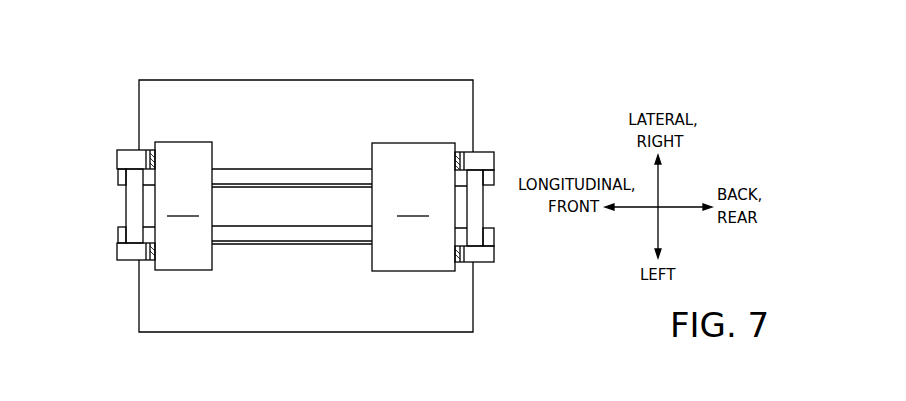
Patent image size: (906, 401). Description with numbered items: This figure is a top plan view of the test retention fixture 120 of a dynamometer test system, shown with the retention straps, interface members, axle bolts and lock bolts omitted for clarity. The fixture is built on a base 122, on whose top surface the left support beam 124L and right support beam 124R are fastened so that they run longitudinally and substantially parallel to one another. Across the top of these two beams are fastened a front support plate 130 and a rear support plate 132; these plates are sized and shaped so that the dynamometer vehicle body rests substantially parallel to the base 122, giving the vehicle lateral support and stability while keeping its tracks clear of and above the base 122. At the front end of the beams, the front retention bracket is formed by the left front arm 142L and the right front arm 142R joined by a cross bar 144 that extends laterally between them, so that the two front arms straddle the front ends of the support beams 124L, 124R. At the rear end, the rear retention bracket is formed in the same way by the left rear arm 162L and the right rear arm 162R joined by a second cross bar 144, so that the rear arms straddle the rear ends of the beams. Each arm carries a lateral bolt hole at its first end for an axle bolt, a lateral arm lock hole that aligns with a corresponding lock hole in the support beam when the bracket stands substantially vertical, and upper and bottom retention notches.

The test retention fixture 120 is at (170, 63).
The base 122 is at (445, 333).
The right support beam 124R is at (283, 172).
The left support beam 124L is at (283, 235).
The front support plate 130 is at (183, 206).
The rear support plate 132 is at (413, 207).
The right front arm 142R is at (128, 160).
The left front arm 142L is at (130, 252).
The cross bar 144 is at (130, 208).
The right rear arm 162R is at (479, 160).
The left rear arm 162L is at (482, 255).